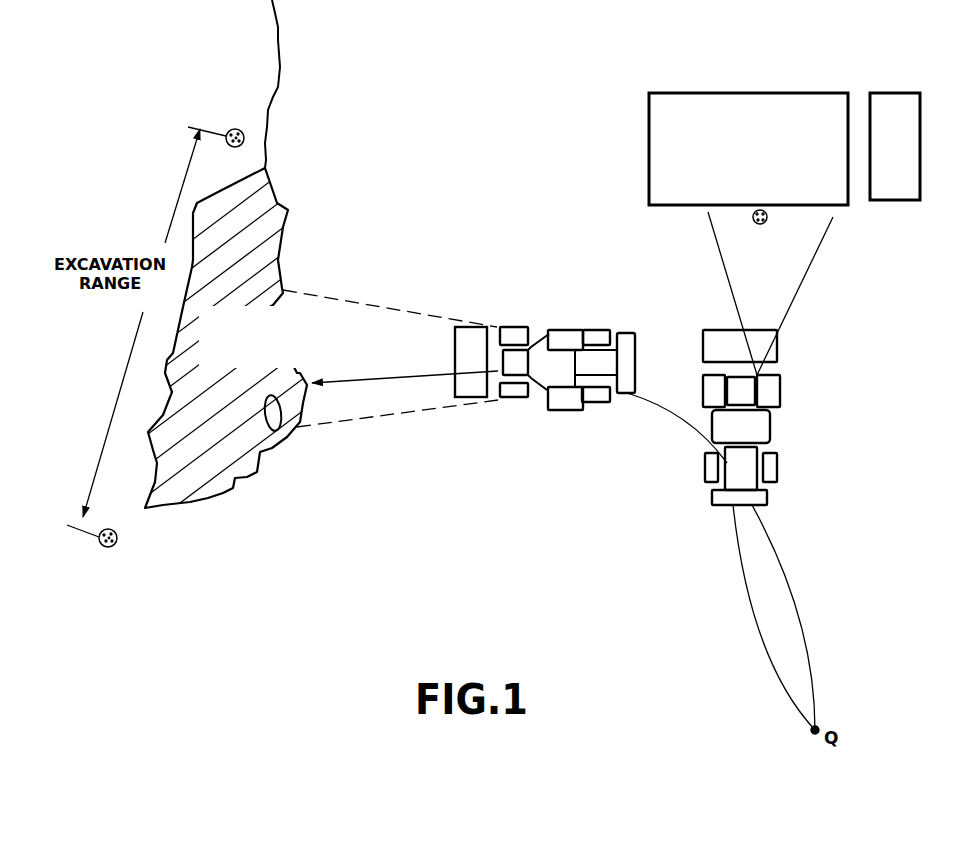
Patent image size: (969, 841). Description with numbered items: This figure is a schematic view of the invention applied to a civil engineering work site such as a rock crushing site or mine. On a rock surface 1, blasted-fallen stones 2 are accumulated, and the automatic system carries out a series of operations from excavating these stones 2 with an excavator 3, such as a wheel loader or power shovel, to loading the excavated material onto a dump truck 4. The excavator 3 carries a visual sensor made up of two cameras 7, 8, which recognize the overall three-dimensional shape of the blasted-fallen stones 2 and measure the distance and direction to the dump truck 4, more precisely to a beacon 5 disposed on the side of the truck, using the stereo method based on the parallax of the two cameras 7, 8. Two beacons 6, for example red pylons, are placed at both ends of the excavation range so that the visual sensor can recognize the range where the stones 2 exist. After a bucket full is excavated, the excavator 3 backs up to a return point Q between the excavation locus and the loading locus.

The rock surface 1 is at (260, 135).
The blasted-fallen stones 2 is at (275, 212).
The excavator 3 is at (545, 347).
The dump truck 4 is at (767, 93).
The beacon 5 is at (767, 221).
The beacons 6 is at (236, 129).
The camera 7 is at (568, 413).
The camera 8 is at (570, 330).